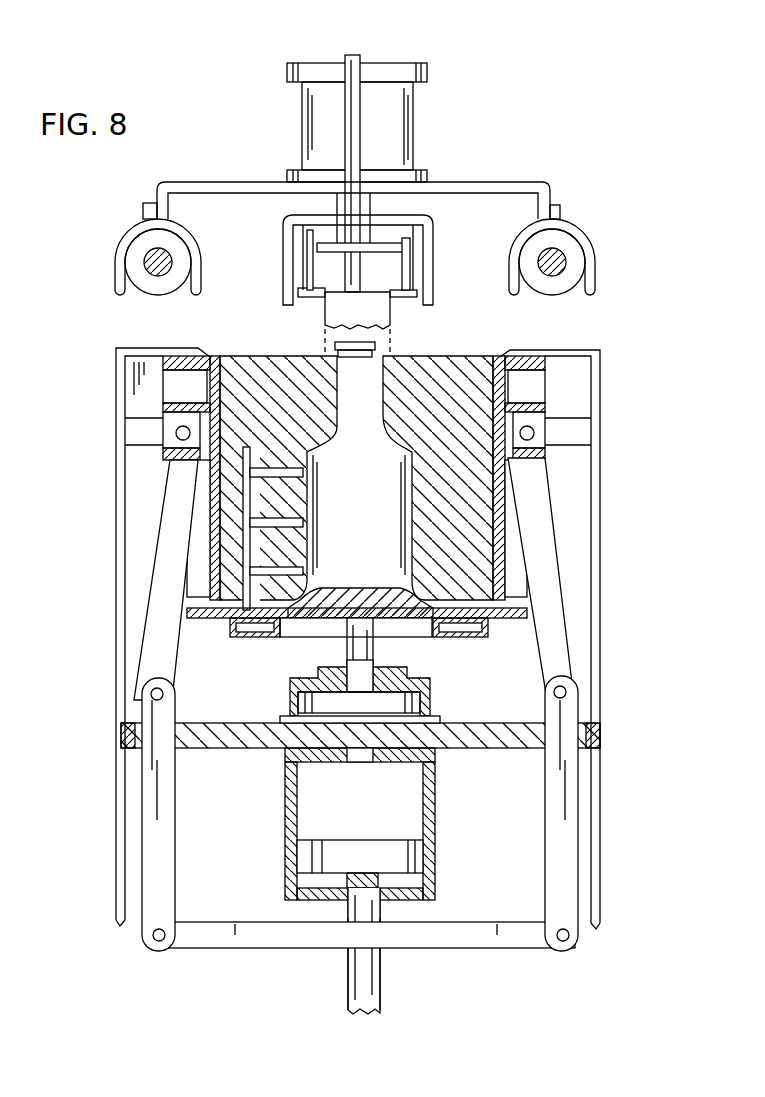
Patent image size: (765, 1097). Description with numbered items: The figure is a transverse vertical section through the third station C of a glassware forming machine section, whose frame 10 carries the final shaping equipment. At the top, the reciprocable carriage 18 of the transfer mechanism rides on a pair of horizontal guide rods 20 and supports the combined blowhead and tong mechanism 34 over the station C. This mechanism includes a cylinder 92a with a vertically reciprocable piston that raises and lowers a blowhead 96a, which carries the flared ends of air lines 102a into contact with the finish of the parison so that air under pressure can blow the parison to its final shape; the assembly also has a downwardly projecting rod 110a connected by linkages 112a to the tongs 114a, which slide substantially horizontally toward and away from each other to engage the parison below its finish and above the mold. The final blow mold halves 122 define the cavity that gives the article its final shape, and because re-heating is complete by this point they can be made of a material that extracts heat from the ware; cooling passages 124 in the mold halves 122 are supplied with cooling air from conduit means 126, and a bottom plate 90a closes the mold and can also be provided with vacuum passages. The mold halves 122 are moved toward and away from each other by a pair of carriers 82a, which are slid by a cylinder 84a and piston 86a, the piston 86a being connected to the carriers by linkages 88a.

The frame 10 is at (602, 493).
The carriage 18 is at (463, 180).
The guide rods 20 is at (158, 272).
The combined blowhead and tong mechanism 34 is at (352, 151).
The carriers 82a is at (207, 357).
The cylinder 84a is at (432, 829).
The piston 86a is at (374, 848).
The linkages 88a is at (537, 515).
The bottom plate 90a is at (378, 610).
The cylinder 92a is at (400, 131).
The blowhead 96a is at (360, 255).
The air lines 102a is at (350, 128).
The downwardly projecting extension or rod 110a is at (350, 278).
The linkages 112a is at (307, 262).
The tongs 114a is at (357, 324).
The final blow mold halves 122 is at (272, 366).
The cooling passages 124 is at (252, 447).
The conduit means 126 is at (262, 638).
The third station C is at (456, 341).